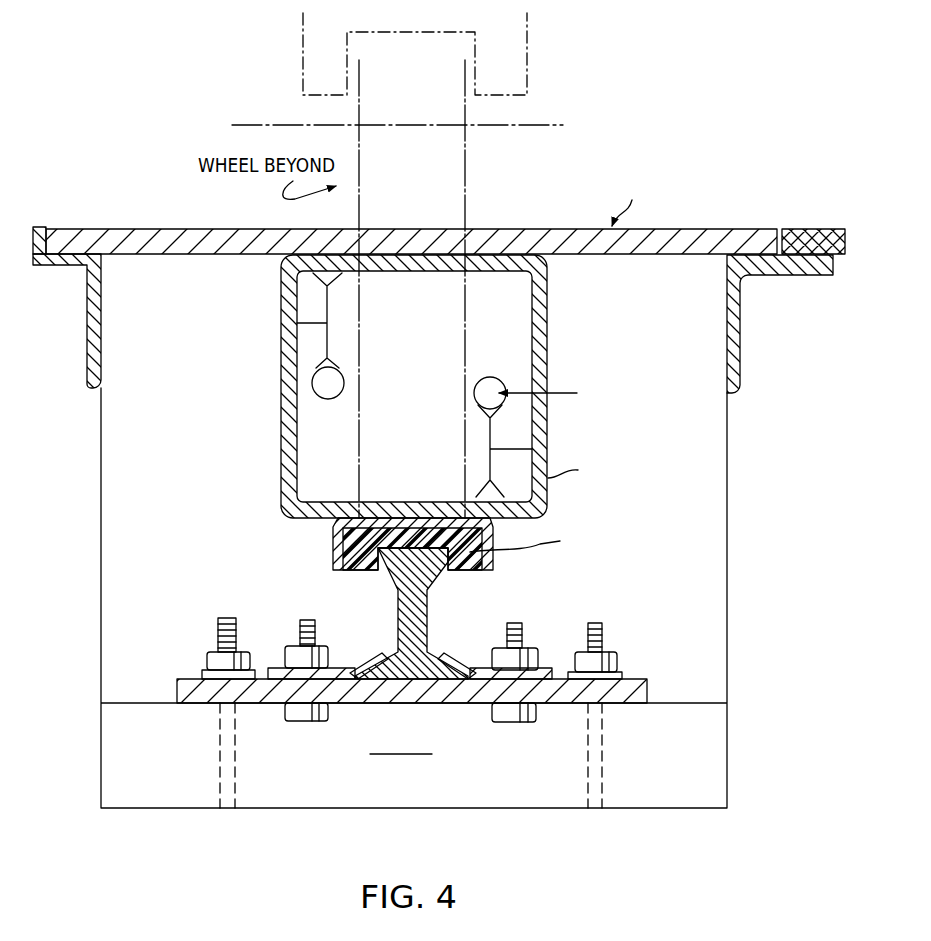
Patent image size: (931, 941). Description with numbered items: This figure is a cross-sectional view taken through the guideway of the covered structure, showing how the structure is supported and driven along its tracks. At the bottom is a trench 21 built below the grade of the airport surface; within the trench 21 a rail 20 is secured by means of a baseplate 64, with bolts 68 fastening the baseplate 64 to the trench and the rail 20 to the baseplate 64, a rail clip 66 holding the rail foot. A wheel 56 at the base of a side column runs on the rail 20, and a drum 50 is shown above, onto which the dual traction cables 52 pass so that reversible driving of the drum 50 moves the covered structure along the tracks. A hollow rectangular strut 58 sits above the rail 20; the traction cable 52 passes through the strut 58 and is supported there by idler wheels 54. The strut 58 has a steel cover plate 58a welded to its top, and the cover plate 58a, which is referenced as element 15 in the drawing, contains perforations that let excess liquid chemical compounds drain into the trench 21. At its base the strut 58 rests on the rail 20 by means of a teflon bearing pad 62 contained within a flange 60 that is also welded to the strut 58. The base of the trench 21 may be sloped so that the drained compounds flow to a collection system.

The perforated steel cover plate 15 is at (818, 226).
The rail 20 is at (399, 612).
The trench 21 is at (727, 663).
The drum 50 is at (528, 30).
The traction cable 52 is at (474, 390).
The idler wheel 54 is at (328, 304).
The wheel 56 is at (465, 202).
The rectangular strut 58 is at (548, 318).
The steel cover plate 58a is at (648, 256).
The flange 60 is at (492, 562).
The teflon bearing pad 62 is at (455, 566).
The baseplate 64 is at (648, 697).
The rail clip 66 is at (445, 663).
The bolts 68 is at (220, 632).